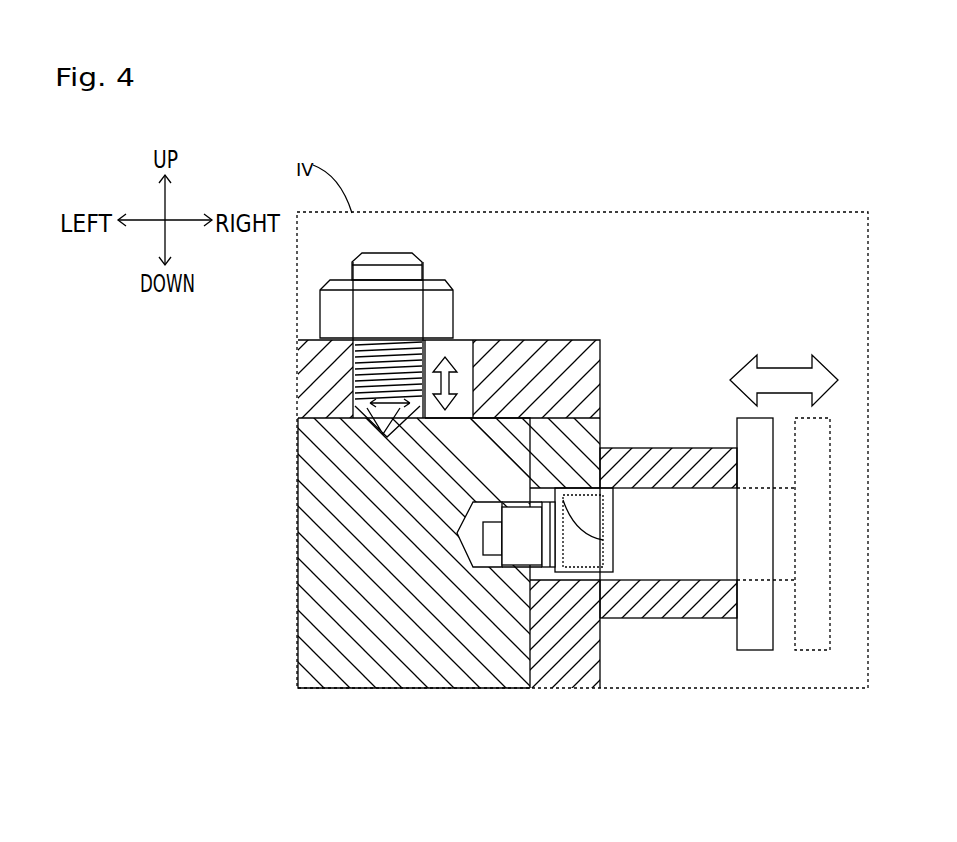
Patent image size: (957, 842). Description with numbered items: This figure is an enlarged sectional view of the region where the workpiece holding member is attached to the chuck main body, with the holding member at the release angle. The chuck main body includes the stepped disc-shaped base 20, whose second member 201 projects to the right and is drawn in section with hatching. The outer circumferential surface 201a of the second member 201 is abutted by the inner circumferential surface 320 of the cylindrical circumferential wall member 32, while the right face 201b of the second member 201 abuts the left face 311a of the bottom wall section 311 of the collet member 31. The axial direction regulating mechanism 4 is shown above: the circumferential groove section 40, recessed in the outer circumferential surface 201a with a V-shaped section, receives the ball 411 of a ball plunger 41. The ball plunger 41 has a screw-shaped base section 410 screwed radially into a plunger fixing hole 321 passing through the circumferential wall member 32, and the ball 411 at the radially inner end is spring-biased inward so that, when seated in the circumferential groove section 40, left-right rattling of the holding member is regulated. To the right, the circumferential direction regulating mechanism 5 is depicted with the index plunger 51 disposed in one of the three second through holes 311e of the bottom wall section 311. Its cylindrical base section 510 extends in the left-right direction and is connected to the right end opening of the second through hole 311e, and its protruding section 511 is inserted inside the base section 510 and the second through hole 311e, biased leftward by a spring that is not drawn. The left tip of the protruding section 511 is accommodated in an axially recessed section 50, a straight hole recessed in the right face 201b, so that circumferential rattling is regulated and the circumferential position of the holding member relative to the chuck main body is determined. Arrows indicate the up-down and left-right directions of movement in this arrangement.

The axial direction regulating mechanism 4 is at (147, 350).
The circumferential groove section 40 is at (360, 386).
The ball plunger 41 is at (335, 318).
The base section 410 is at (388, 255).
The ball 411 is at (417, 418).
The inner circumferential surface 320 is at (437, 430).
The plunger fixing hole 321 is at (455, 458).
The left face 311a is at (530, 472).
The protruding section 511 is at (457, 522).
The base 20 is at (315, 586).
The second member 201 is at (300, 626).
The outer circumferential surface 201a is at (473, 400).
The right face 201b is at (557, 413).
The circumferential wall member 32 is at (587, 388).
The collet member 31 is at (580, 433).
The bottom wall section 311 is at (600, 446).
The second through hole 311e is at (603, 538).
The base section 510 is at (660, 598).
The axially recessed section 50 is at (507, 567).
The index plunger 51 is at (635, 555).
The circumferential direction regulating mechanism 5 is at (565, 745).